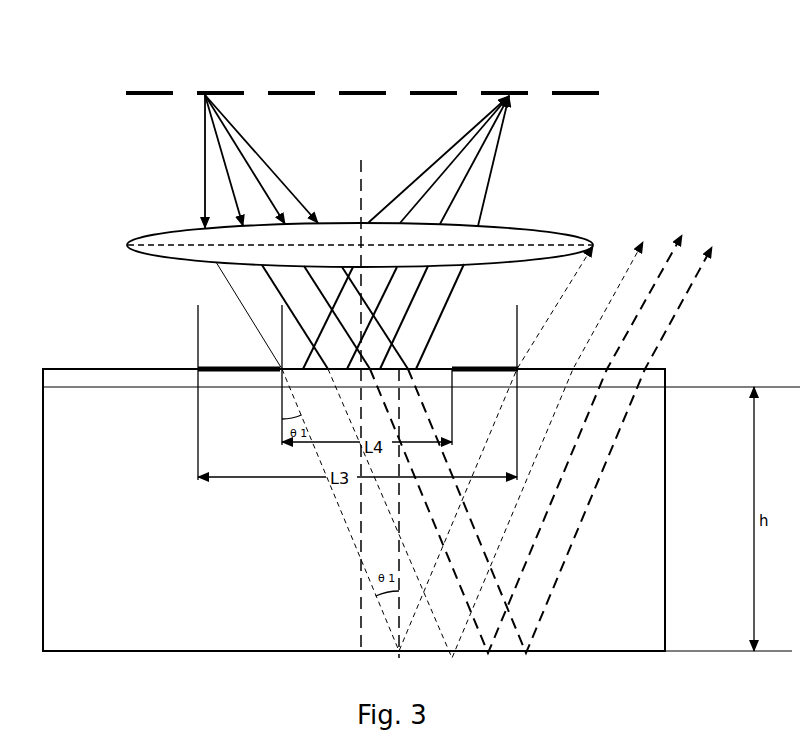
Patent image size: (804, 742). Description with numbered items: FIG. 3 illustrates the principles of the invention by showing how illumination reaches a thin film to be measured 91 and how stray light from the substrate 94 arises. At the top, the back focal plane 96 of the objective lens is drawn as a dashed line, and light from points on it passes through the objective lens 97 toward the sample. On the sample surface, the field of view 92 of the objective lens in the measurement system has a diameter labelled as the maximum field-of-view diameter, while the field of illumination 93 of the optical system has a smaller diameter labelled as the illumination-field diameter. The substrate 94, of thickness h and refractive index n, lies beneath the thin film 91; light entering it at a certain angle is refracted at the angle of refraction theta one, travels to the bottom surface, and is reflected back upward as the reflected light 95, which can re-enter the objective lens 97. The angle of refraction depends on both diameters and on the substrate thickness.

The thin film to be measured 91 is at (82, 378).
The field of view of the objective lens 92 is at (244, 352).
The field of illumination of the optical system 93 is at (436, 365).
The substrate 94 is at (645, 590).
The light reflected by the substrate 95 is at (663, 357).
The back focal plane of the objective lens 96 is at (580, 82).
The objective lens 97 is at (578, 245).